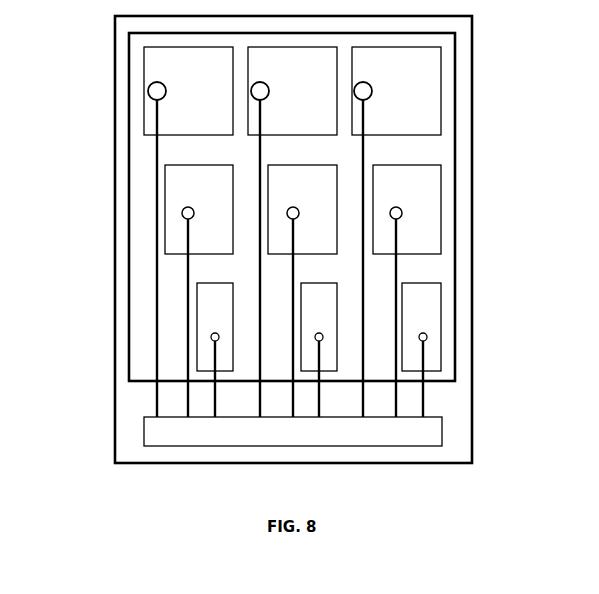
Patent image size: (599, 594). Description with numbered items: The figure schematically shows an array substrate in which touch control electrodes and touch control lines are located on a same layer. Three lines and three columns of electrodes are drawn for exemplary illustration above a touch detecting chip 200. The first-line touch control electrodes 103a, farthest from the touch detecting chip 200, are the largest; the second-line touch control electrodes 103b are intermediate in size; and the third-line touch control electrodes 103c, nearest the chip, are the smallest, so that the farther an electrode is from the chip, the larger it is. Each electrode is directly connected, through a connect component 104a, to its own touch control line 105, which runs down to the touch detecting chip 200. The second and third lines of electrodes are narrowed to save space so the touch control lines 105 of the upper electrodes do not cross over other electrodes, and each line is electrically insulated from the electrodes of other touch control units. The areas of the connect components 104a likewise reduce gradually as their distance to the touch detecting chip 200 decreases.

The touch control electrode 103a is at (441, 92).
The touch control electrode 103b is at (441, 210).
The touch control electrode 103c is at (441, 327).
The connect component 104a is at (148, 92).
The touch control line 105 is at (155, 149).
The touch detecting chip 200 is at (437, 437).